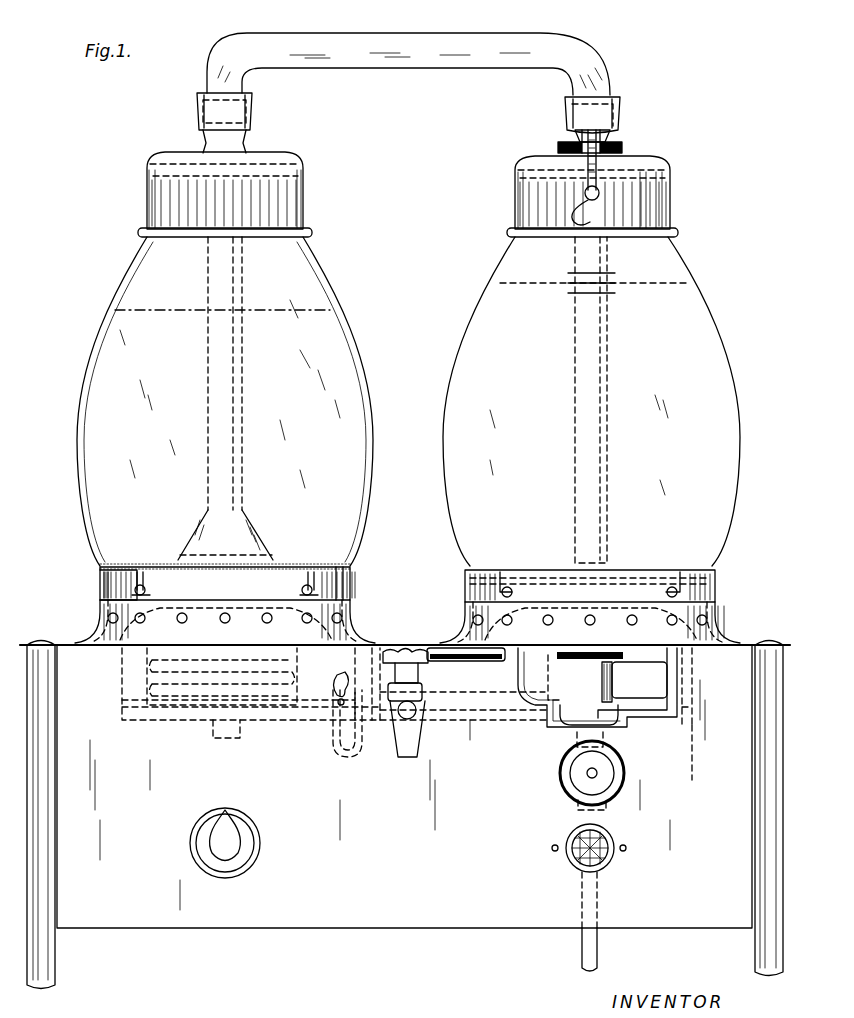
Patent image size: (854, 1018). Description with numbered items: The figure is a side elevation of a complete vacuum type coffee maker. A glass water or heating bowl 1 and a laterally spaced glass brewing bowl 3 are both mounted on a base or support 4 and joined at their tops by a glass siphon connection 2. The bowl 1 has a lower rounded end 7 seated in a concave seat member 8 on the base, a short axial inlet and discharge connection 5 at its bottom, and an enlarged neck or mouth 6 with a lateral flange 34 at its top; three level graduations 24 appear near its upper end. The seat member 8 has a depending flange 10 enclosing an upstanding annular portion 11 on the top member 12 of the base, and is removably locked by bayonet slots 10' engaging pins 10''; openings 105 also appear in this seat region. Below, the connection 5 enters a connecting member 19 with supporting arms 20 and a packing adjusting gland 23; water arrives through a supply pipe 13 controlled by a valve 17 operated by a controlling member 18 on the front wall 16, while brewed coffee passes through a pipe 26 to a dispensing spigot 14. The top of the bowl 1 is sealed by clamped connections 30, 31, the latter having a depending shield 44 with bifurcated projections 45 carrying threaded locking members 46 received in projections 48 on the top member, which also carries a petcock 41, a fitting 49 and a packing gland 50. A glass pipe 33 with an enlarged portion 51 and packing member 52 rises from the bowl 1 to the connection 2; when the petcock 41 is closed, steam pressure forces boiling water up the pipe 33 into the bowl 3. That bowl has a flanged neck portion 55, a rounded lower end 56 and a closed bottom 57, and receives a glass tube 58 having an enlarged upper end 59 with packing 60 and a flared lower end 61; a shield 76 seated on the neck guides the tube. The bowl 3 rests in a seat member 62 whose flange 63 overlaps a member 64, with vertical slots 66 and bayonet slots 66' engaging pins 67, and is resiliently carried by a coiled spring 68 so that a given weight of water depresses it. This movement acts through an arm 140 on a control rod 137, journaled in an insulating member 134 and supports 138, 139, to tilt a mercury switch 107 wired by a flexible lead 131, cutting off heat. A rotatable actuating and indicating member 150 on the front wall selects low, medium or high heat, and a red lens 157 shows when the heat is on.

The bowl 1 is at (728, 364).
The connection 2 is at (437, 33).
The bowl 3 is at (352, 347).
The support 4 is at (745, 654).
The inlet and discharge connection 5 is at (575, 683).
The neck 6 is at (672, 214).
The lower rounded end 7 is at (463, 684).
The seat member 8 is at (468, 572).
The flange 10 is at (579, 621).
The bayonet slots 10' is at (576, 567).
The pins 10'' is at (607, 565).
The annular portion 11 is at (716, 612).
The top member 12 is at (345, 615).
The water supply pipe 13 is at (582, 950).
The dispensing spigot 14 is at (430, 692).
The front wall 16 is at (482, 906).
The controlling valve 17 is at (604, 752).
The controlling member 18 is at (620, 770).
The connecting member 19 is at (612, 680).
The supporting arms 20 is at (665, 690).
The packing adjusting gland 23 is at (557, 656).
The level indications 24 is at (604, 290).
The pipe 26 is at (562, 712).
The top member 30 is at (645, 165).
The member 31 is at (670, 186).
The pipe 33 is at (608, 388).
The lateral flange 34 is at (517, 180).
The petcock 41 is at (585, 130).
The shield 44 is at (515, 214).
The bifurcated projections 45 is at (587, 215).
The threaded locking members 46 is at (586, 178).
The projections 48 is at (600, 162).
The fitting neck 49 is at (607, 133).
The packing gland 50 is at (558, 146).
The enlarged portion 51 is at (620, 100).
The packing member 52 is at (612, 96).
The neck portion 55 is at (178, 152).
The rounded lower end 56 is at (342, 602).
The closed bottom 57 is at (225, 582).
The tube 58 is at (240, 390).
The enlarged upper end 59 is at (255, 108).
The packing 60 is at (205, 92).
The flared lower end 61 is at (196, 531).
The seat member 62 is at (345, 575).
The flange 63 is at (100, 578).
The member 64 is at (342, 620).
The vertical slots 66 is at (219, 557).
The bayonet slots 66' is at (191, 604).
The pins 67 is at (135, 590).
The coiled spring 68 is at (147, 690).
The shield 76 is at (312, 205).
The collar holes 105 is at (550, 615).
The switch 107 is at (338, 700).
The flexible lead 131 is at (358, 755).
The insulating member 134 is at (356, 666).
The control rod 137 is at (272, 720).
The support 138 is at (122, 703).
The support 139 is at (695, 705).
The arm 140 is at (218, 738).
The actuating and indicating member 150 is at (258, 828).
The red lens 157 is at (566, 840).